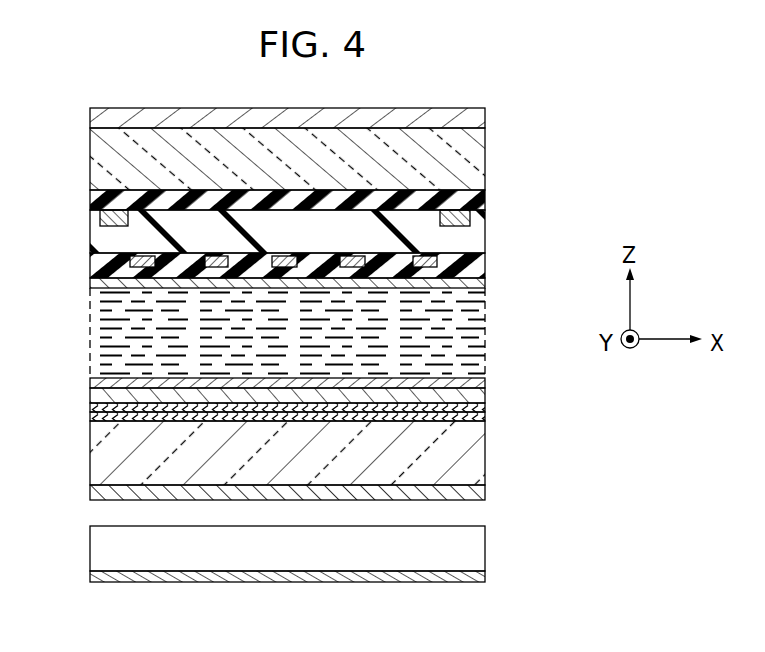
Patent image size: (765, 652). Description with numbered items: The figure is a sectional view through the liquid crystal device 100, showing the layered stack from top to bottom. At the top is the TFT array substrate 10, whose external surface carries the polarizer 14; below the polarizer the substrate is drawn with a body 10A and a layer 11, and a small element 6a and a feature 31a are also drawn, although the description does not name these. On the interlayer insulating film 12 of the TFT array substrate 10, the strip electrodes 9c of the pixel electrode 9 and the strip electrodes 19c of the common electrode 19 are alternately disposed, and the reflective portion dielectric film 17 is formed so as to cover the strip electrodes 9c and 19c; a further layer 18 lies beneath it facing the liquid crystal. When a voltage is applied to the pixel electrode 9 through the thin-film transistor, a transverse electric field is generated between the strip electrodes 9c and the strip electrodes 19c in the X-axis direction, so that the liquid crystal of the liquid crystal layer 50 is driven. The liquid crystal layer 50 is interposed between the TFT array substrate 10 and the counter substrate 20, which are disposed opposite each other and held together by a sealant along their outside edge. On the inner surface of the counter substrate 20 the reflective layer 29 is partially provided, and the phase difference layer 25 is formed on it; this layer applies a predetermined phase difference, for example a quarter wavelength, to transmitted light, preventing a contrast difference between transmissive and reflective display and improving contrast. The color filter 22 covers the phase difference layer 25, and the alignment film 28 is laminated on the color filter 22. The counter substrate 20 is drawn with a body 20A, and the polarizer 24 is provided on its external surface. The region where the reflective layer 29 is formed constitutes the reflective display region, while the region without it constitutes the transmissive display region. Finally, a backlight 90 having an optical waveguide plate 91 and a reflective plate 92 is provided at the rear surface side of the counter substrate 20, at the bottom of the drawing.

The liquid crystal device 100 is at (493, 83).
The TFT array substrate 10 is at (70, 108).
The polarizer 14 is at (485, 117).
The substrate body 10A is at (485, 150).
The light shielding layer 11 is at (485, 197).
The data line 6a is at (468, 218).
The interlayer insulating film 12 is at (485, 232).
The reflective portion dielectric film 17 is at (485, 265).
The pixel electrode 9 is at (140, 268).
The strip electrodes 9c is at (286, 268).
The common electrode 19 is at (213, 268).
The strip electrodes 19c is at (352, 268).
The alignment film 18 is at (485, 283).
The contact hole 31a is at (104, 217).
The liquid crystal layer 50 is at (485, 333).
The counter substrate 20 is at (70, 380).
The alignment film 28 is at (485, 383).
The color filter 22 is at (485, 396).
The phase difference layer 25 is at (485, 408).
The reflective layer 29 is at (485, 417).
The substrate body 20A is at (485, 465).
The polarizer 24 is at (485, 492).
The backlight 90 is at (552, 527).
The optical waveguide plate 91 is at (485, 548).
The reflective plate 92 is at (485, 577).